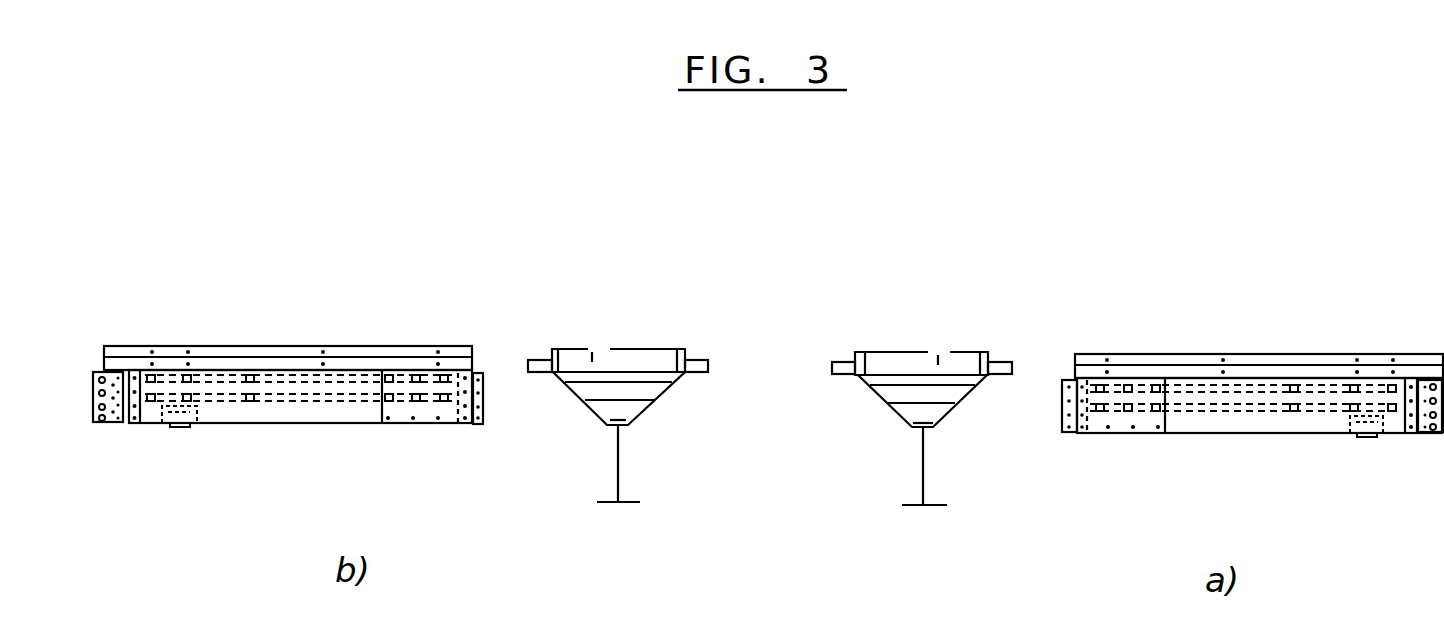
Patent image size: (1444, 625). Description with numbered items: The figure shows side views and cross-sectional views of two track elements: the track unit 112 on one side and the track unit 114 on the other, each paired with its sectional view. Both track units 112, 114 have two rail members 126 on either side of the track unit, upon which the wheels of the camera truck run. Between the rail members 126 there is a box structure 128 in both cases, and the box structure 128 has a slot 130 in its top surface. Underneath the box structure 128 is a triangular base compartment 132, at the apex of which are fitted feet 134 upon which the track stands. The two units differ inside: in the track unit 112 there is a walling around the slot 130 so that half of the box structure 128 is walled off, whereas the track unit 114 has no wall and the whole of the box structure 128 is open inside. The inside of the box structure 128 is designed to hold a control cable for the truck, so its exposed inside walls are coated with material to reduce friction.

The track unit 112 is at (1257, 423).
The track unit 114 is at (305, 413).
The rail member 126 is at (540, 363).
The box structure 128 is at (642, 352).
The slot 130 is at (602, 342).
The triangular base compartment 132 is at (650, 405).
The feet 134 is at (618, 472).